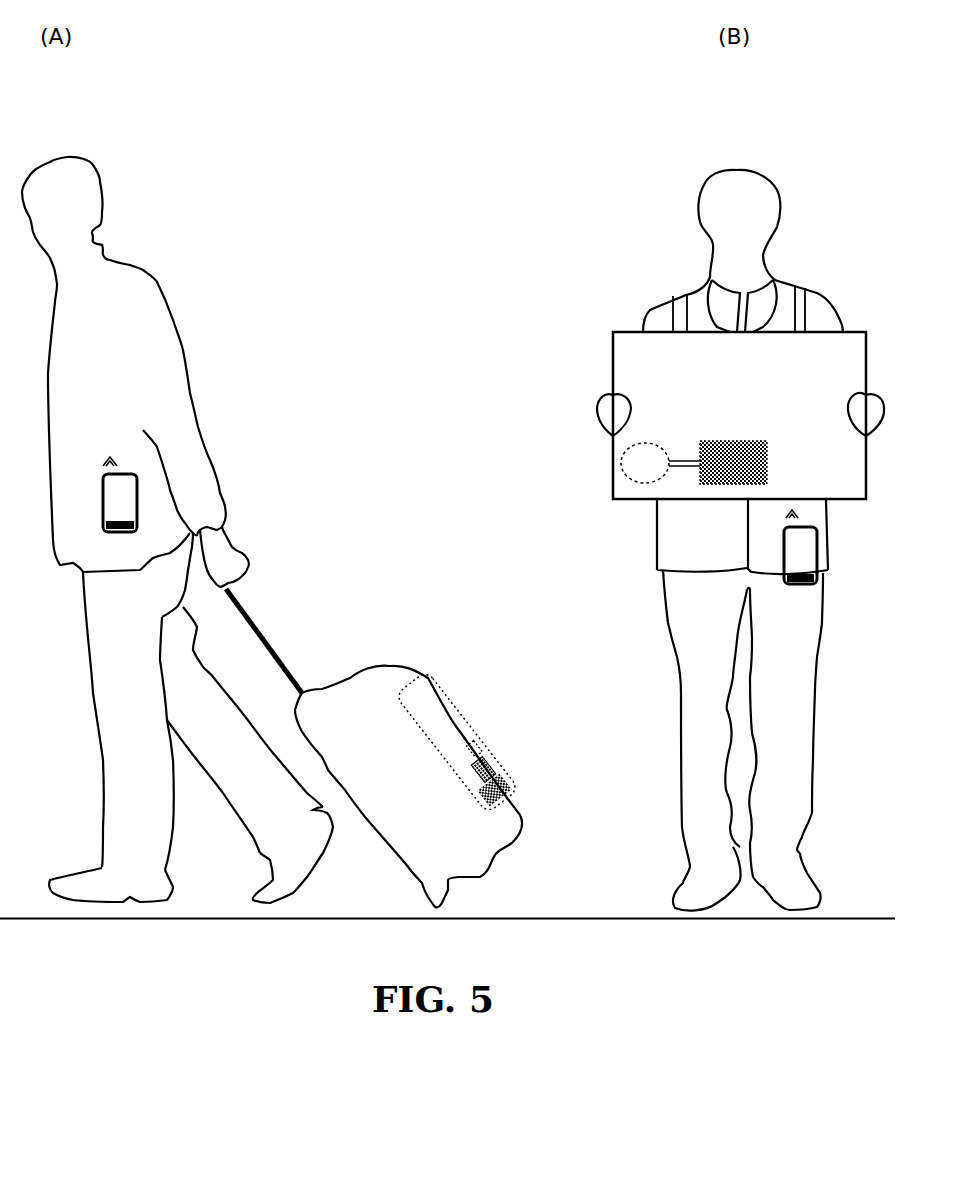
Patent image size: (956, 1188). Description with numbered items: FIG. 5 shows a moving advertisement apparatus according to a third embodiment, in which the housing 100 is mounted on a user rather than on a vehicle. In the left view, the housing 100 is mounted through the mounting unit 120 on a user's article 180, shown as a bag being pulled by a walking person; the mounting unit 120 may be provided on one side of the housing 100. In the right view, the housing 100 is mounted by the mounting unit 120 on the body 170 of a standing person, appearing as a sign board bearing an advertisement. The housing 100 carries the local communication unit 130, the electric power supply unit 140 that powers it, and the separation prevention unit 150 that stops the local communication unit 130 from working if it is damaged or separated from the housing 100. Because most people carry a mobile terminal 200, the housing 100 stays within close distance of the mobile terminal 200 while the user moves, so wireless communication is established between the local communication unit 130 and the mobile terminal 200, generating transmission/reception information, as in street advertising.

The housing 100 is at (430, 676).
The mounting unit 120 is at (799, 279).
The local communication unit 130 is at (726, 492).
The electric power supply unit 140 is at (499, 768).
The separation prevention unit 150 is at (681, 482).
The body 170 is at (645, 304).
The user's article 180 is at (340, 668).
The mobile terminal 200 is at (674, 530).